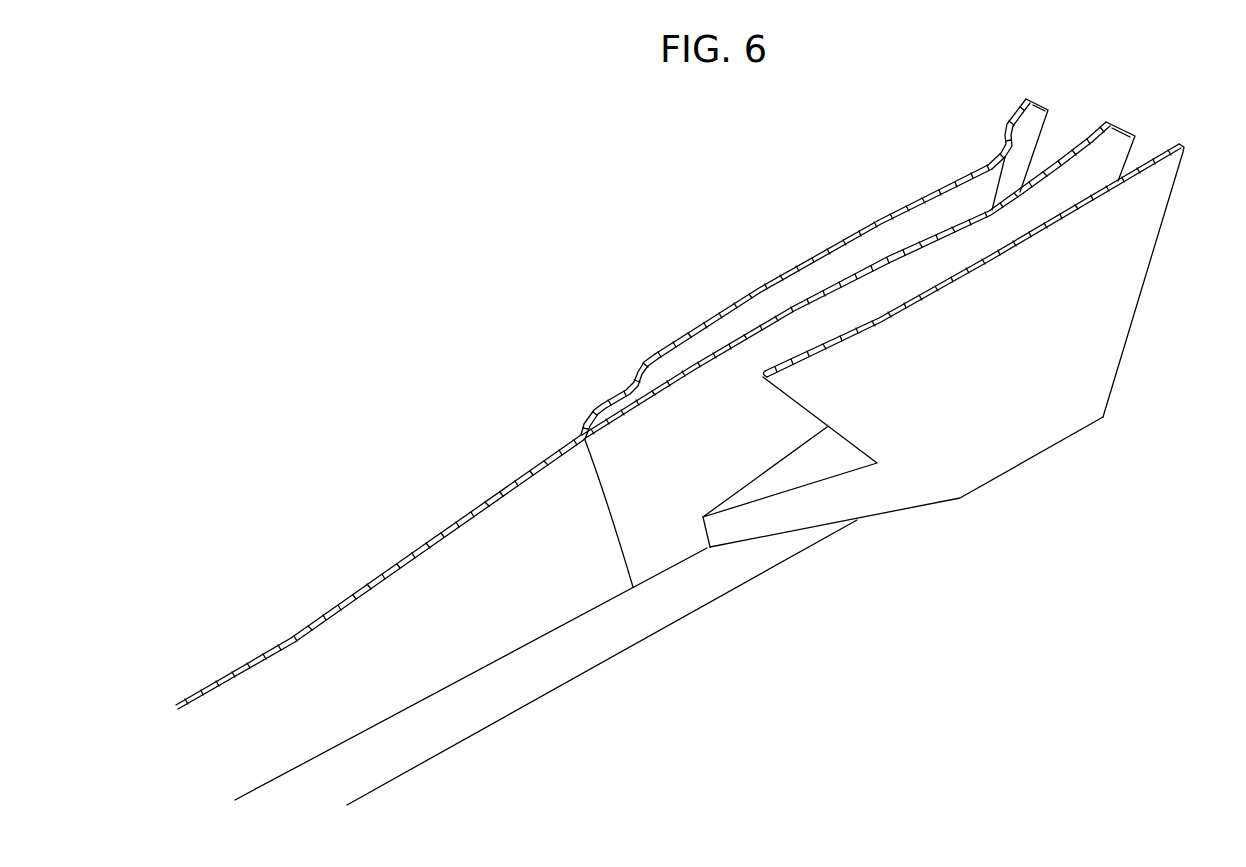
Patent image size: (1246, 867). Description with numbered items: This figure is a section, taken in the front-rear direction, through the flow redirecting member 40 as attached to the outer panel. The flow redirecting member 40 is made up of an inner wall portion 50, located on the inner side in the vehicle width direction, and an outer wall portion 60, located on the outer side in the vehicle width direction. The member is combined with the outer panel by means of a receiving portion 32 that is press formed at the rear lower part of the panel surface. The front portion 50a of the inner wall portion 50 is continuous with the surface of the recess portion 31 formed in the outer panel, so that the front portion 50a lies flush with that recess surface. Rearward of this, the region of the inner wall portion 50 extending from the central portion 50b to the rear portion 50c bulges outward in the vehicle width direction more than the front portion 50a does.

The recess portion 31 is at (451, 588).
The receiving portion 32 is at (740, 296).
The flow redirecting member 40 is at (1153, 323).
The inner wall portion 50 is at (723, 417).
The front portion 50a is at (661, 459).
The central portion 50b is at (849, 307).
The rear portion 50c is at (941, 264).
The outer wall portion 60 is at (1018, 398).